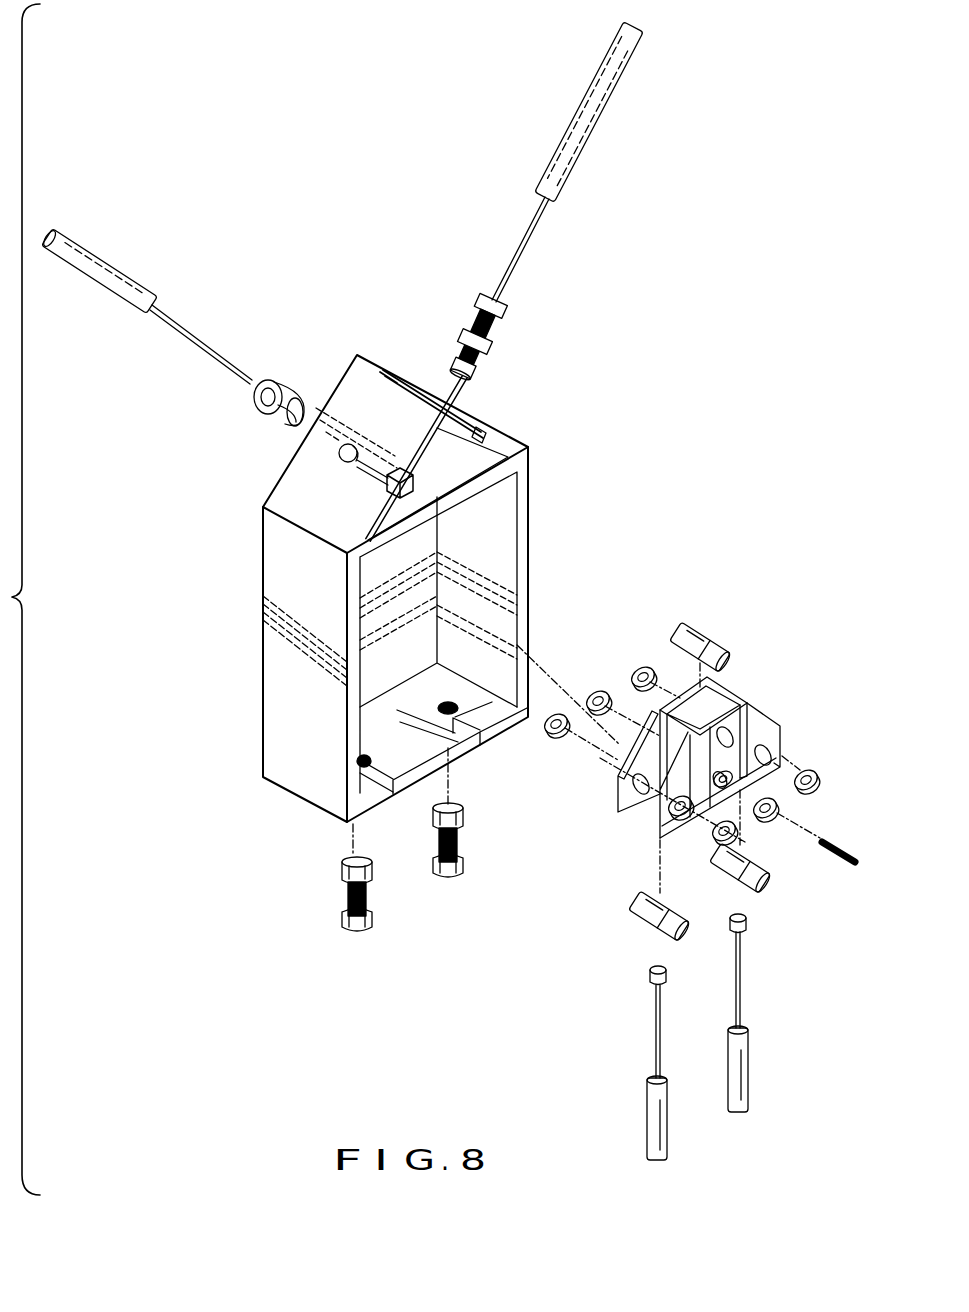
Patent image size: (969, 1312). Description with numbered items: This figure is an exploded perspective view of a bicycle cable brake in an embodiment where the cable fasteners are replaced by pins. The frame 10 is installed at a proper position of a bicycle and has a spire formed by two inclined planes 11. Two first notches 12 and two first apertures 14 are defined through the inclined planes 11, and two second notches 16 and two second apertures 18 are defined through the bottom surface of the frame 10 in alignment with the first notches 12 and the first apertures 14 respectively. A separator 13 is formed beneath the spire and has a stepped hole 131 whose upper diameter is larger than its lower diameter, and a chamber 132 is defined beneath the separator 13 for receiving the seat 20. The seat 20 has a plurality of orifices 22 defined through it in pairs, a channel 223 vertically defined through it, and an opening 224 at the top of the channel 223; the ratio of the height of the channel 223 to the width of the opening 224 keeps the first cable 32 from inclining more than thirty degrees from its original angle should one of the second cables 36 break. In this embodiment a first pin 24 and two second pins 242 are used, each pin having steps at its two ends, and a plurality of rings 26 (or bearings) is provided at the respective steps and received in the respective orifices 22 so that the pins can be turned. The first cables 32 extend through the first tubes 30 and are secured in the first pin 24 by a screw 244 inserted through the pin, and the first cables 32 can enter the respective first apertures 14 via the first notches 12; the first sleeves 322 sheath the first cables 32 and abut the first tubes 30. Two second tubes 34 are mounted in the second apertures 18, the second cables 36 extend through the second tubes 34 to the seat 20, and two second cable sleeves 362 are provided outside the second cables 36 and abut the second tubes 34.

The frame 10 is at (418, 570).
The inclined planes 11 is at (341, 390).
The first notches 12 is at (497, 430).
The separator 13 is at (473, 500).
The stepped hole 131 is at (414, 478).
The chamber 132 is at (365, 642).
The first apertures 14 is at (343, 464).
The second notches 16 is at (478, 716).
The second apertures 18 is at (450, 700).
The seat 20 is at (713, 727).
The orifices 22 is at (773, 745).
The channel 223 is at (735, 695).
The opening 224 is at (677, 693).
The first pin 24 is at (700, 625).
The second pins 242 is at (765, 877).
The screw 244 is at (822, 862).
The rings 26 is at (557, 712).
The first tubes 30 is at (483, 340).
The first cables 32 is at (527, 250).
The first sleeves 322 is at (580, 160).
The second tubes 34 is at (352, 922).
The second cables 36 is at (662, 1022).
The second cable sleeves 362 is at (668, 1108).